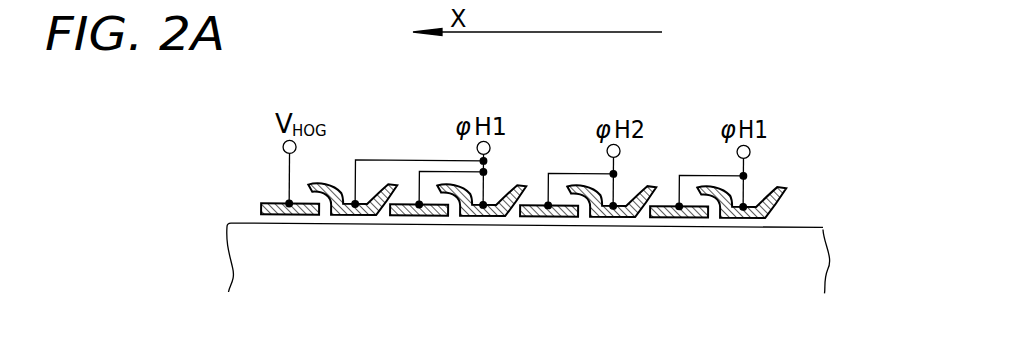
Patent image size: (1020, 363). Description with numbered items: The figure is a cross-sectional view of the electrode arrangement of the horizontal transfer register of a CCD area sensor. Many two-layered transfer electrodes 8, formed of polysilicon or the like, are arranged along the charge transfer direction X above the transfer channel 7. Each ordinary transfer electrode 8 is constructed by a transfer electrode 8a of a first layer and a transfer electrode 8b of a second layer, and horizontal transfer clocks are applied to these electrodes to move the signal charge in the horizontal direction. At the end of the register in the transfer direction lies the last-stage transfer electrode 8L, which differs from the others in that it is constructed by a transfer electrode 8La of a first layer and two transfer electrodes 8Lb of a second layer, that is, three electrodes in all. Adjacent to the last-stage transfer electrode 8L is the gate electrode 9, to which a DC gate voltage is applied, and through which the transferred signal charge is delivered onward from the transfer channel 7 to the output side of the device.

The gate electrode 9 is at (275, 203).
The last-stage transfer electrode 8L is at (417, 265).
The transfer electrode of a second layer 8Lb is at (349, 220).
The transfer electrode of a first layer 8La is at (419, 251).
The two-layered transfer electrode 8 is at (649, 196).
The transfer electrode of a first layer 8a is at (549, 203).
The transfer electrode of a second layer 8b is at (612, 203).
The transfer channel 7 is at (818, 256).